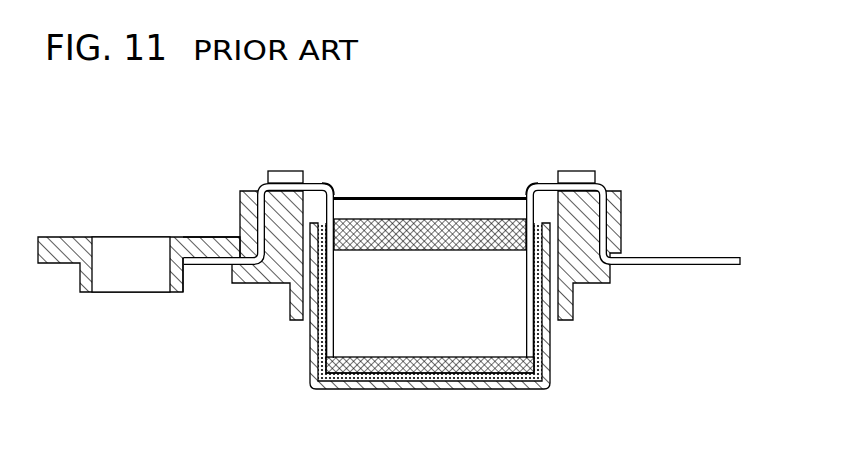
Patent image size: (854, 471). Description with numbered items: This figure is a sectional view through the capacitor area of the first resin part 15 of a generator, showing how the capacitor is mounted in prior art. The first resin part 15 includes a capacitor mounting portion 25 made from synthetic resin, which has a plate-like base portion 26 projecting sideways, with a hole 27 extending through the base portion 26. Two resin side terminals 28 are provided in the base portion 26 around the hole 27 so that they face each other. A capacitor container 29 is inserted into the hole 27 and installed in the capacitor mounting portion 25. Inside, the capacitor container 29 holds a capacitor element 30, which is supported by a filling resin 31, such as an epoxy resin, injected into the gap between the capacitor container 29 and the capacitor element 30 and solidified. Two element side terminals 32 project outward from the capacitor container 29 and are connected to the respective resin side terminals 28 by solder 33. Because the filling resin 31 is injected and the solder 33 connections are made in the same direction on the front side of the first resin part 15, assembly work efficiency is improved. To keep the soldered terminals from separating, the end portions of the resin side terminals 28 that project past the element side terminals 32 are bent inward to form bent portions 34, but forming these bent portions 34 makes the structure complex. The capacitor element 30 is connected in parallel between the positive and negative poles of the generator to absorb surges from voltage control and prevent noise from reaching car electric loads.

The first resin part 15 is at (110, 232).
The capacitor mounting portion 25 is at (573, 307).
The base portion 26 is at (190, 235).
The hole 27 is at (416, 196).
The resin side terminal 28 is at (205, 266).
The capacitor container 29 is at (312, 381).
The capacitor element 30 is at (428, 345).
The filling resin 31 is at (453, 219).
The element side terminal 32 is at (333, 184).
The solder 33 is at (245, 190).
The bent portion 34 is at (283, 171).